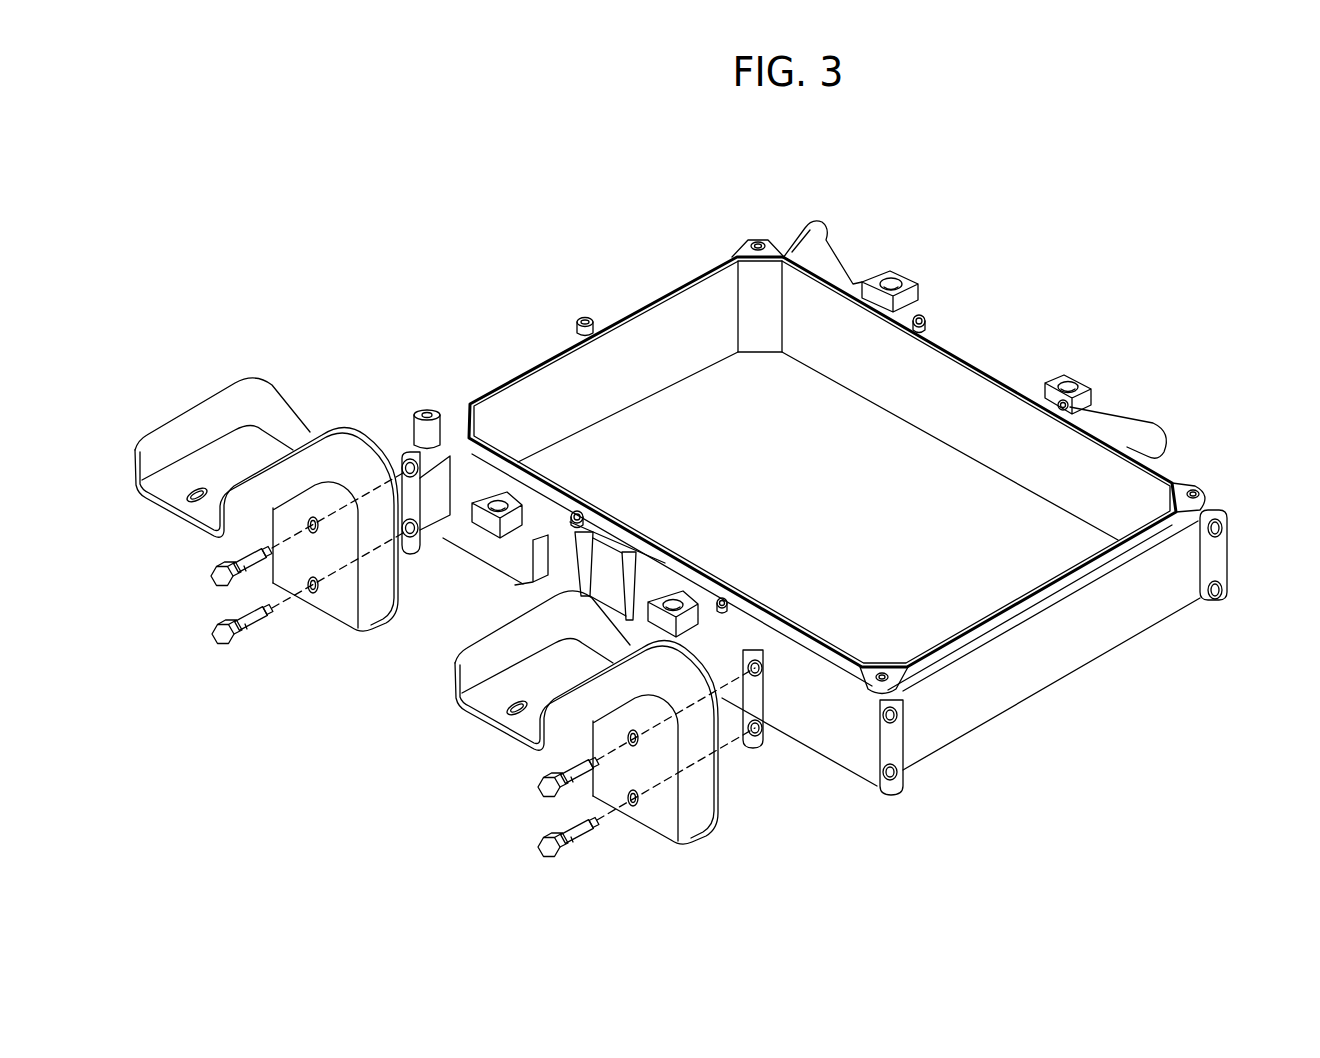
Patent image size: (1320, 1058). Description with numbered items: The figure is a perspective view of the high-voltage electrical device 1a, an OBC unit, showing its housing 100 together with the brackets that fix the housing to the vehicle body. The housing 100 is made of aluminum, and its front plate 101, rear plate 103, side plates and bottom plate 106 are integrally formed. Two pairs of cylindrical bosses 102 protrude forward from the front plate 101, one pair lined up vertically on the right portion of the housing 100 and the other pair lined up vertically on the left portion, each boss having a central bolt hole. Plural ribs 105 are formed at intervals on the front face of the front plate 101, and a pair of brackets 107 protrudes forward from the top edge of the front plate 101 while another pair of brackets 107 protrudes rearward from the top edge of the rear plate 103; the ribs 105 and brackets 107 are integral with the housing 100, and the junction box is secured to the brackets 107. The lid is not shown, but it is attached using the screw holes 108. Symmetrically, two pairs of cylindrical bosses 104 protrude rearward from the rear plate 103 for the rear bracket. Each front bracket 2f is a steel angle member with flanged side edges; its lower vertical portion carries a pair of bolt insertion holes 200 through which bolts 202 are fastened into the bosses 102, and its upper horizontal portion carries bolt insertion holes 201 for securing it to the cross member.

The electronic control unit 1a is at (752, 220).
The housing 100 is at (1063, 663).
The front plate 101 is at (603, 560).
The cylindrical bosses 102 is at (433, 537).
The rear plate 103 is at (948, 378).
The cylindrical bosses 104 is at (1157, 437).
The ribs 105 is at (583, 572).
The bottom plate 106 is at (683, 413).
The brackets 107 is at (890, 287).
The screw holes 108 is at (1200, 486).
The front bracket 2f is at (377, 610).
The bolt insertion holes 200 is at (637, 800).
The bolt insertion holes 201 is at (510, 710).
The bolts 202 is at (543, 857).